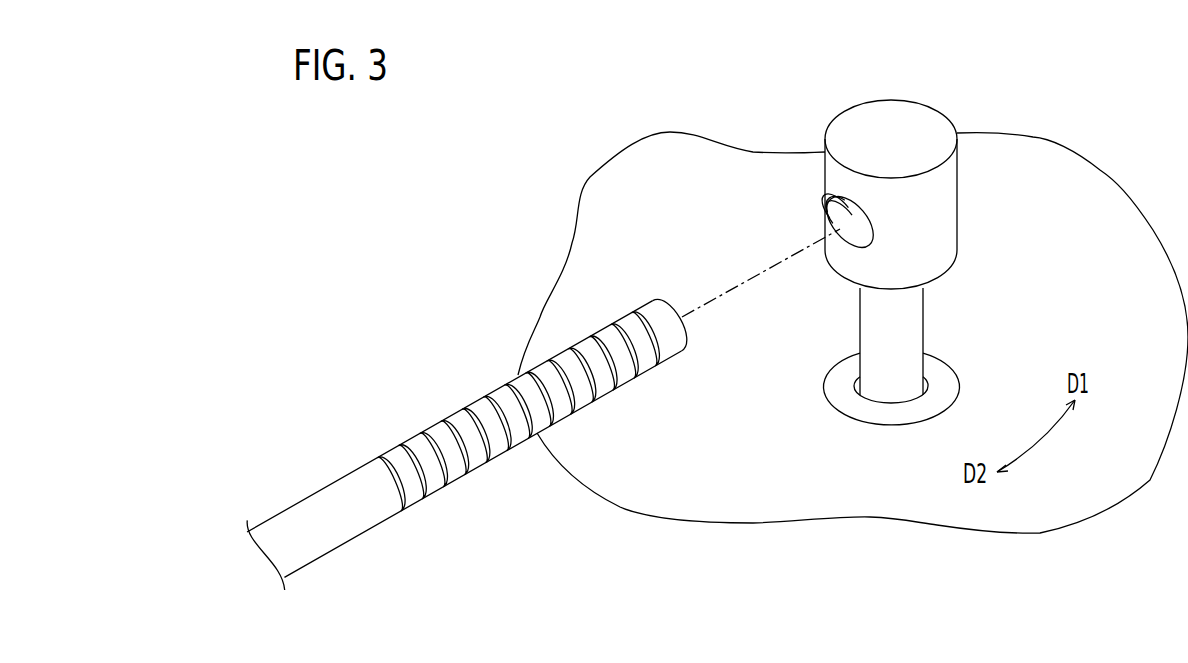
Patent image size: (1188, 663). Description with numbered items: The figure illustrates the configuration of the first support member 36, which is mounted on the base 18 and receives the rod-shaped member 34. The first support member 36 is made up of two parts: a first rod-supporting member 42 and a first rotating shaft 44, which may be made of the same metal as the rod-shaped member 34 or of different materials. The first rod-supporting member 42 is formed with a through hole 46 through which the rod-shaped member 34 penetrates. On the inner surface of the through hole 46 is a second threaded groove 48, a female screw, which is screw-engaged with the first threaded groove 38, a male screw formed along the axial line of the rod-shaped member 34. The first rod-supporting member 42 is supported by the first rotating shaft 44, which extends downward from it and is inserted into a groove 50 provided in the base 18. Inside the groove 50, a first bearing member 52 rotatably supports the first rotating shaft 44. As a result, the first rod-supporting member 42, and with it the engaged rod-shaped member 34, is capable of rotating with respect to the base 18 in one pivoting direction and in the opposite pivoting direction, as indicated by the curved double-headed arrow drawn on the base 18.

The base 18 is at (848, 502).
The rod-shaped member 34 is at (471, 438).
The first support member 36 is at (881, 234).
The first threaded groove 38 is at (533, 402).
The first rod-supporting member 42 is at (947, 218).
The first rotating shaft 44 is at (912, 322).
The through hole 46 is at (830, 219).
The second threaded groove 48 is at (834, 216).
The groove 50 is at (947, 377).
The first bearing member 52 is at (843, 381).